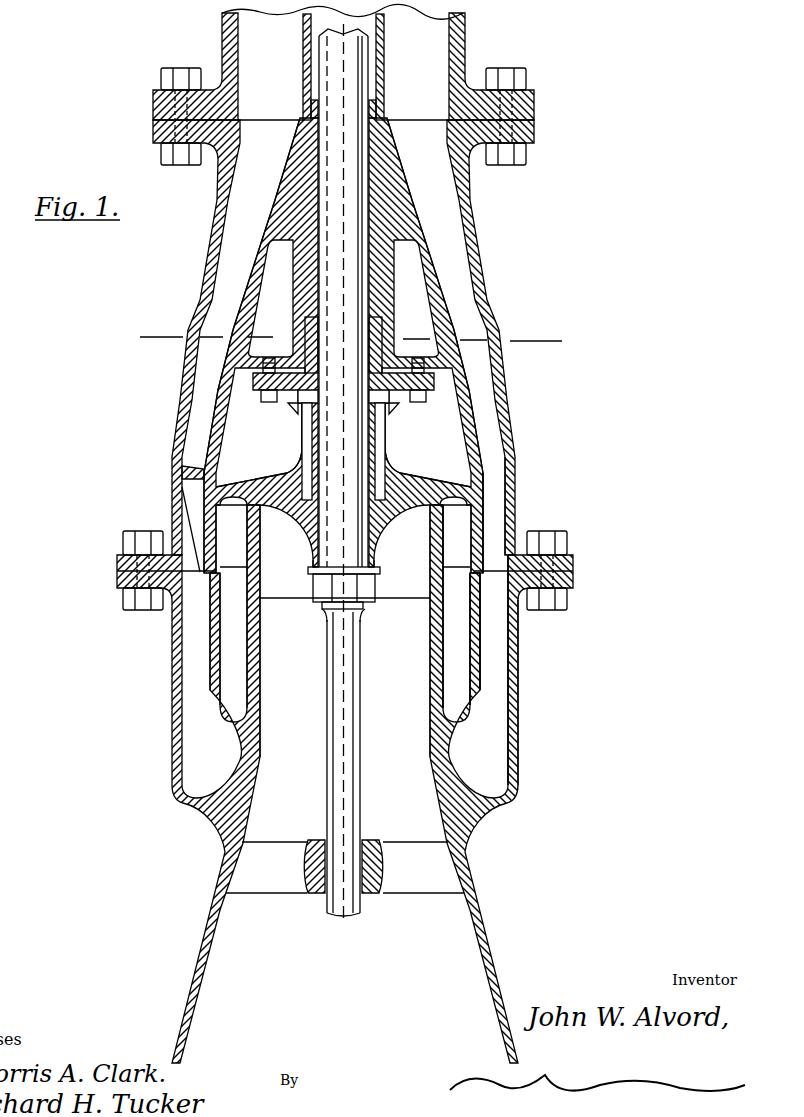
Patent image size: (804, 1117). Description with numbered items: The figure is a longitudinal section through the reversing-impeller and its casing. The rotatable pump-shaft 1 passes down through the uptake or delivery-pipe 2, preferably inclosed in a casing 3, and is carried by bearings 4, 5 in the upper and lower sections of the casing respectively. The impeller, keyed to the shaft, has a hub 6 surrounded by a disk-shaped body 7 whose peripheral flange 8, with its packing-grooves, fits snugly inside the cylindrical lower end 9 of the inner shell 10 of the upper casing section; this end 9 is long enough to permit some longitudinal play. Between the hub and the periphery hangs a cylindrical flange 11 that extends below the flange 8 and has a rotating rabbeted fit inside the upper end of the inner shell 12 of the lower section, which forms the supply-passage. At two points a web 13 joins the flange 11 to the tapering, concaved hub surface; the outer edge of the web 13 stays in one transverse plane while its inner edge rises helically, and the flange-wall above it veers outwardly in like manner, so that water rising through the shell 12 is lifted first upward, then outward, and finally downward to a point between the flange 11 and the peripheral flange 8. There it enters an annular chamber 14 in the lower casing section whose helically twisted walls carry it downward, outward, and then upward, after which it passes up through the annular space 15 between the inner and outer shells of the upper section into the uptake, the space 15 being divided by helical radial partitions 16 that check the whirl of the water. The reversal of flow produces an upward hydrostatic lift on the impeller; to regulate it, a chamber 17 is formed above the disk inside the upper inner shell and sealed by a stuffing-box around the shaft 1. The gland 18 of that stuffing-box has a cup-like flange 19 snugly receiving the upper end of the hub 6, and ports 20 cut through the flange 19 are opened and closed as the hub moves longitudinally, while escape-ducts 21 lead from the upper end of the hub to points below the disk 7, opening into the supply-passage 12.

The pump-shaft 1 is at (320, 67).
The uptake or delivery-pipe 2 is at (452, 39).
The casing 3 is at (378, 43).
The bearing 4 is at (370, 203).
The bearing 5 is at (367, 899).
The hub 6 is at (385, 438).
The disk-shaped body 7 is at (258, 479).
The peripheral flange 8 is at (219, 538).
The cylindrical lower end 9 is at (485, 530).
The inner shell 10 is at (432, 292).
The cylindrical flange 11 is at (432, 537).
The inner shell 12 is at (433, 703).
The web 13 is at (456, 606).
The annular chamber 14 is at (494, 670).
The annular space 15 is at (486, 473).
The helical radial partitions 16 is at (182, 476).
The chamber 17 is at (273, 404).
The gland 18 is at (383, 323).
The flange 19 is at (398, 412).
The ports 20 is at (296, 398).
The escape-ducts 21 is at (305, 449).